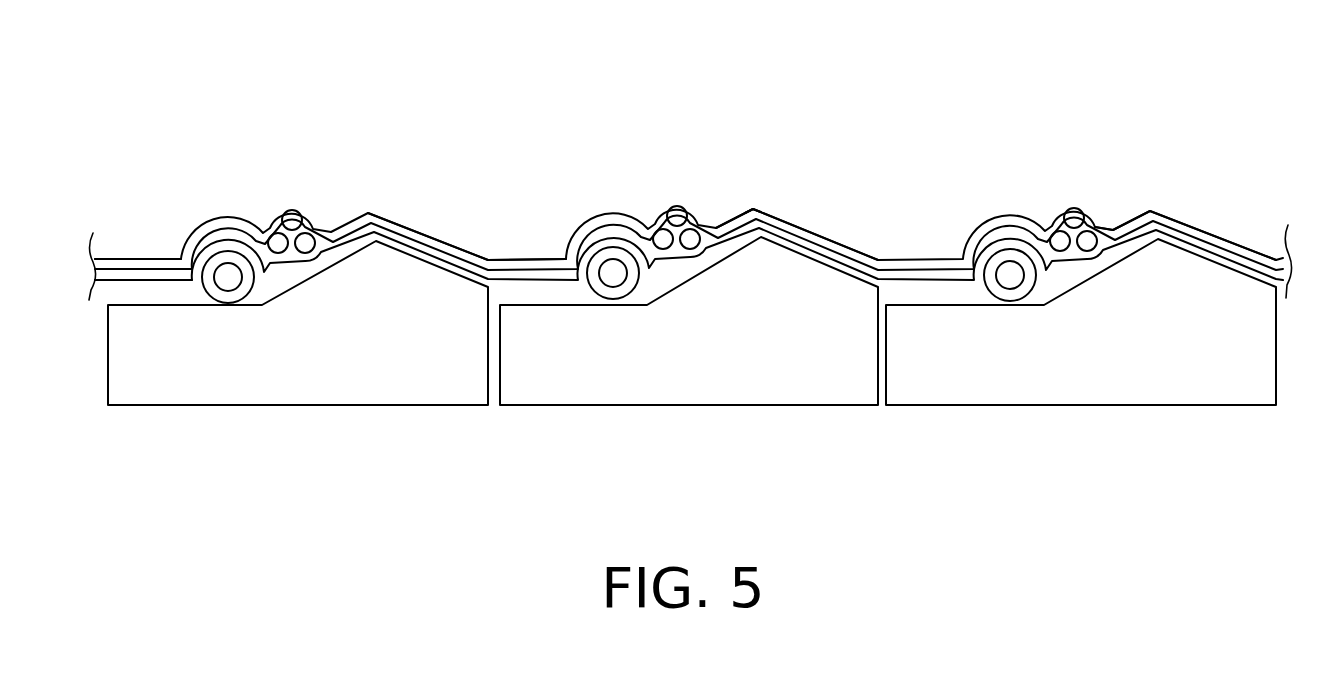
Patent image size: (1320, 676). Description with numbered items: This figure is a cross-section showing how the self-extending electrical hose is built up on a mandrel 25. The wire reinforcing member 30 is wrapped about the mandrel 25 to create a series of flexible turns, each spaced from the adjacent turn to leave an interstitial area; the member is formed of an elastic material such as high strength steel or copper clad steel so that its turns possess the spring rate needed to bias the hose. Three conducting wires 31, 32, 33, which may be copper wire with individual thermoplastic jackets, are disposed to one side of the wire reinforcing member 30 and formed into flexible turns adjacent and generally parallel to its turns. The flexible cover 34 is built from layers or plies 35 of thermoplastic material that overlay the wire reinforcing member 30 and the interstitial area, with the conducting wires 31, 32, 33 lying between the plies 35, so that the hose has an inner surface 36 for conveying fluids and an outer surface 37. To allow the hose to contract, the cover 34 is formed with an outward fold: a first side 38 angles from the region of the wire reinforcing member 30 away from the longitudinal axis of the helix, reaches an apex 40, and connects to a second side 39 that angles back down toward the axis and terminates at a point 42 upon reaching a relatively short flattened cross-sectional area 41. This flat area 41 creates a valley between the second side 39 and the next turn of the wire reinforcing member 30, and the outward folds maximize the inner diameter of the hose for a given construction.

The mandrel 25 is at (651, 406).
The wire reinforcing member 30 is at (231, 282).
The conducting wire 31 is at (273, 238).
The conducting wire 32 is at (292, 216).
The conducting wire 33 is at (308, 240).
The flexible cover 34 is at (921, 254).
The plies 35 is at (1114, 216).
The inner surface 36 is at (133, 284).
The outer surface 37 is at (131, 258).
The first side 38 is at (739, 211).
The second side 39 is at (787, 209).
The apex 40 is at (760, 208).
The flattened cross-sectional area 41 is at (527, 250).
The point 42 is at (492, 253).